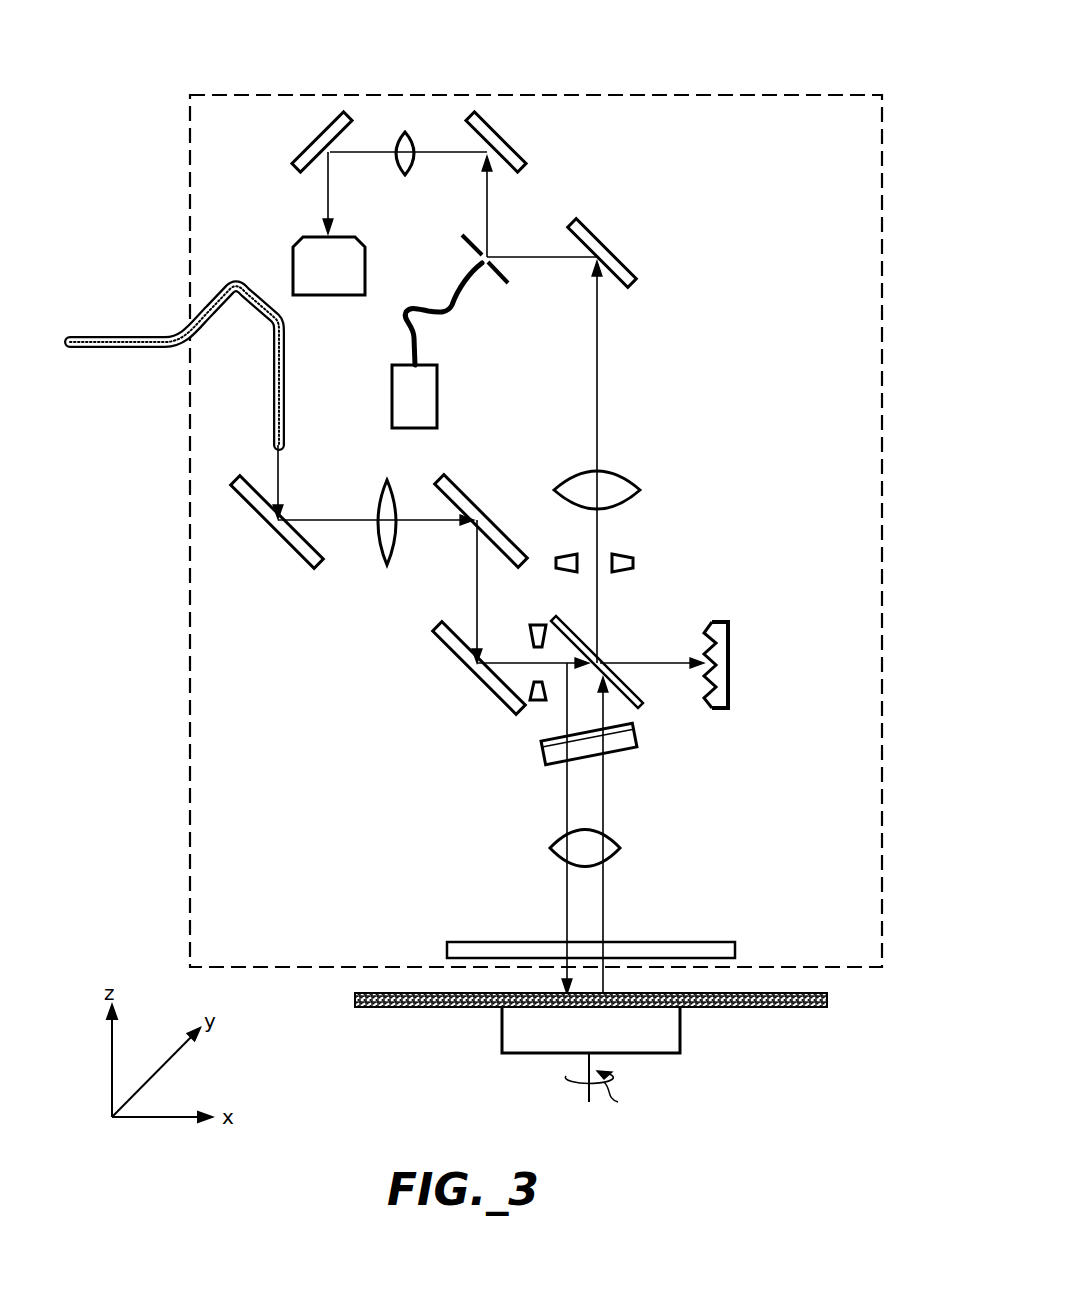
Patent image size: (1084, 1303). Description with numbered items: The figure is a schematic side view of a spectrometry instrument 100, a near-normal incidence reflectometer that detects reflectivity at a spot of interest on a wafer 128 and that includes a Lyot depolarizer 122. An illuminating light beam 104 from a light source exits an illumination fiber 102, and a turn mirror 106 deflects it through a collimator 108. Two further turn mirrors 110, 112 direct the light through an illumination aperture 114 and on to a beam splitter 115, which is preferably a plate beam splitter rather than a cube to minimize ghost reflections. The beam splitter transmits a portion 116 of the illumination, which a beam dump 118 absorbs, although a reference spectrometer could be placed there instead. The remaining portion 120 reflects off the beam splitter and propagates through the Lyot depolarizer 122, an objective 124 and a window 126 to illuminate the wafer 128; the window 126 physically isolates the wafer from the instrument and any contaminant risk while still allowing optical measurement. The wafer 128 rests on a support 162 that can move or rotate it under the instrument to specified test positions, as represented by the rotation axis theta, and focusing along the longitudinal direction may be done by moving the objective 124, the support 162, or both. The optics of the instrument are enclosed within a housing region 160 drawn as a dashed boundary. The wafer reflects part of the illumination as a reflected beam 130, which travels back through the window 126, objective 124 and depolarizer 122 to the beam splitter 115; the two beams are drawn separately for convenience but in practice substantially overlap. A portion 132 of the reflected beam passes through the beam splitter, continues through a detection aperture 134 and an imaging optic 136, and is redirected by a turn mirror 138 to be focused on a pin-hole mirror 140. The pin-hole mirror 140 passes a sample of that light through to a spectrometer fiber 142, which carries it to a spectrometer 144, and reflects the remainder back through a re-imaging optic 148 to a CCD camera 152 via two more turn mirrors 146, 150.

The spectrometry instrument 100 is at (257, 47).
The illumination fiber 102 is at (160, 340).
The illuminating light beam 104 is at (362, 522).
The turn mirror 106 is at (268, 540).
The collimator 108 is at (391, 556).
The turn mirror 110 is at (477, 497).
The turn mirror 112 is at (468, 682).
The illumination aperture 114 is at (540, 702).
The beam splitter 115 is at (562, 619).
The transmitted portion 116 is at (645, 666).
The beam dump 118 is at (736, 684).
The illumination beam portion 120 is at (566, 795).
The Lyot depolarizer 122 is at (638, 744).
The objective 124 is at (552, 848).
The window 126 is at (447, 949).
The wafer 128 is at (408, 1010).
The reflected beam 130 is at (604, 880).
The reflected beam portion 132 is at (598, 622).
The detection aperture 134 is at (635, 563).
The imaging optic 136 is at (611, 476).
The turn mirror 138 is at (606, 245).
The pin-hole mirror 140 is at (461, 237).
The spectrometer fiber 142 is at (452, 309).
The spectrometer 144 is at (438, 395).
The turn mirror 146 is at (510, 139).
The re-imaging optic 148 is at (415, 160).
The turn mirror 150 is at (316, 133).
The CCD camera 152 is at (293, 258).
The housing 160 is at (398, 94).
The support 162 is at (683, 1018).